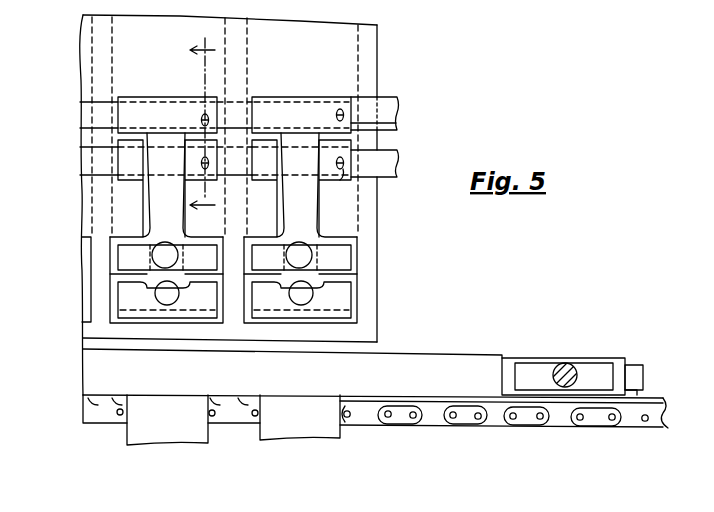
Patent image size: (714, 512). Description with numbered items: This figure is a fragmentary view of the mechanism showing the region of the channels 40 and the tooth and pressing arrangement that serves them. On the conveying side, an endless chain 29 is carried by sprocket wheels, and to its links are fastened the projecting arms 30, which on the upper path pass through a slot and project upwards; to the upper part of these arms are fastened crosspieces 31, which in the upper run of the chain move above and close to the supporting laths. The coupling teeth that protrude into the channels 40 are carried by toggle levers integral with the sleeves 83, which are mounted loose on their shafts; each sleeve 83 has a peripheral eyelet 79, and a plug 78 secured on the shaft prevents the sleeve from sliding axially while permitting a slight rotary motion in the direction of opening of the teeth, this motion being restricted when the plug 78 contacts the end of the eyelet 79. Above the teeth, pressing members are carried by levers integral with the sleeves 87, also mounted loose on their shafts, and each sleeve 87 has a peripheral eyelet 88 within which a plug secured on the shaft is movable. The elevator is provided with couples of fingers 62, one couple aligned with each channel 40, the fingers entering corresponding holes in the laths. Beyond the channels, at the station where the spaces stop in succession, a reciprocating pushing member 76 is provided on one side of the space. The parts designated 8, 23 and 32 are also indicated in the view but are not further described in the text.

The channel 40 is at (345, 38).
The section line 8- 8 is at (202, 126).
The sleeve 87 is at (310, 110).
The plug 78 is at (340, 108).
The peripheral eyelet 88 is at (397, 126).
The sleeve 83 is at (265, 156).
The peripheral eyelet 79 is at (340, 175).
The table 32 is at (463, 342).
The endless chain 29 is at (382, 428).
The projecting arm 30 is at (635, 410).
The finger 62 is at (275, 432).
The pushing member 76 is at (522, 367).
The roller 23 is at (555, 360).
The crosspiece 31 is at (632, 372).